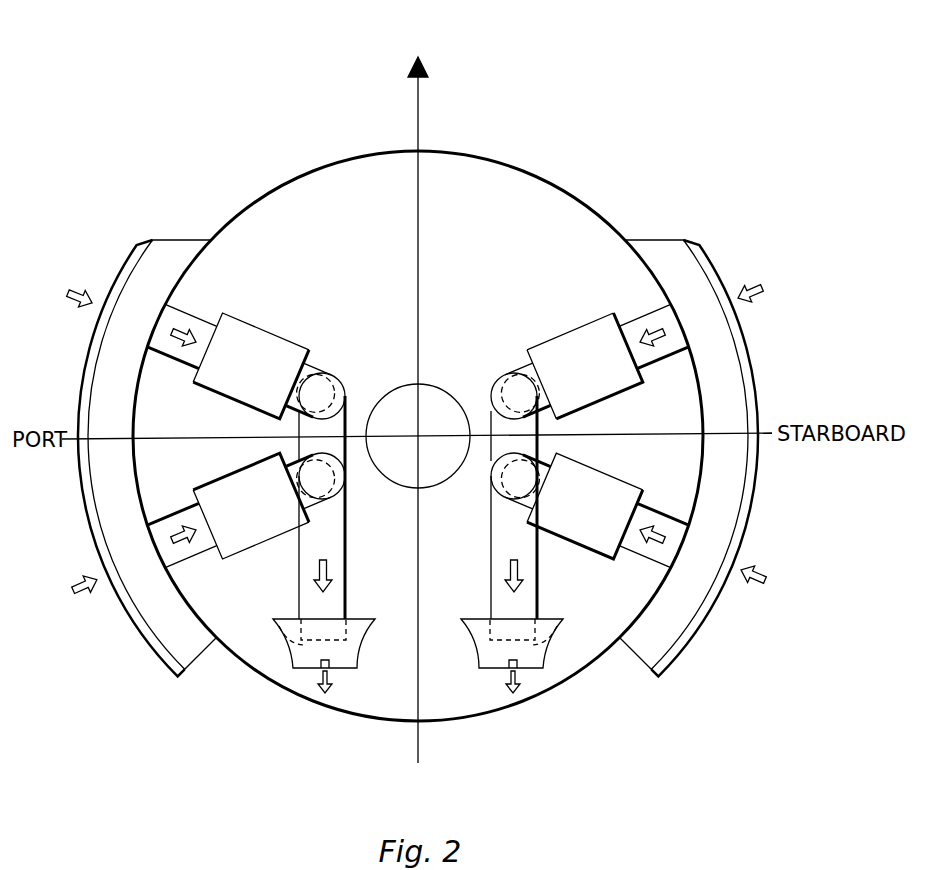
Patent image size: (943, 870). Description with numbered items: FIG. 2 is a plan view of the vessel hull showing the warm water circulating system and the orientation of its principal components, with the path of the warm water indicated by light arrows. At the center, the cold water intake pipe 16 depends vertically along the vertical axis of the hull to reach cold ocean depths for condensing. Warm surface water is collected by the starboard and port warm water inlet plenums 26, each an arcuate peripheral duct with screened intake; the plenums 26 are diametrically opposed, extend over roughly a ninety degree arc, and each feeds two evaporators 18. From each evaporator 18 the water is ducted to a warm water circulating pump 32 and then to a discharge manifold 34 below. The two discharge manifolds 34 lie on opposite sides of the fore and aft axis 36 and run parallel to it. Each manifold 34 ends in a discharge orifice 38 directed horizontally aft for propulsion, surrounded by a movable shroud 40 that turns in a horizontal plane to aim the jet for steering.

The cold water intake pipe 16 is at (432, 385).
The evaporator 18 is at (267, 331).
The warm water inlet plenum 26 is at (178, 241).
The warm water circulating pump 32 is at (331, 376).
The discharge manifold 34 is at (347, 556).
The fore and aft axis 36 is at (418, 104).
The discharge orifice 38 is at (273, 621).
The movable shroud 40 is at (365, 656).